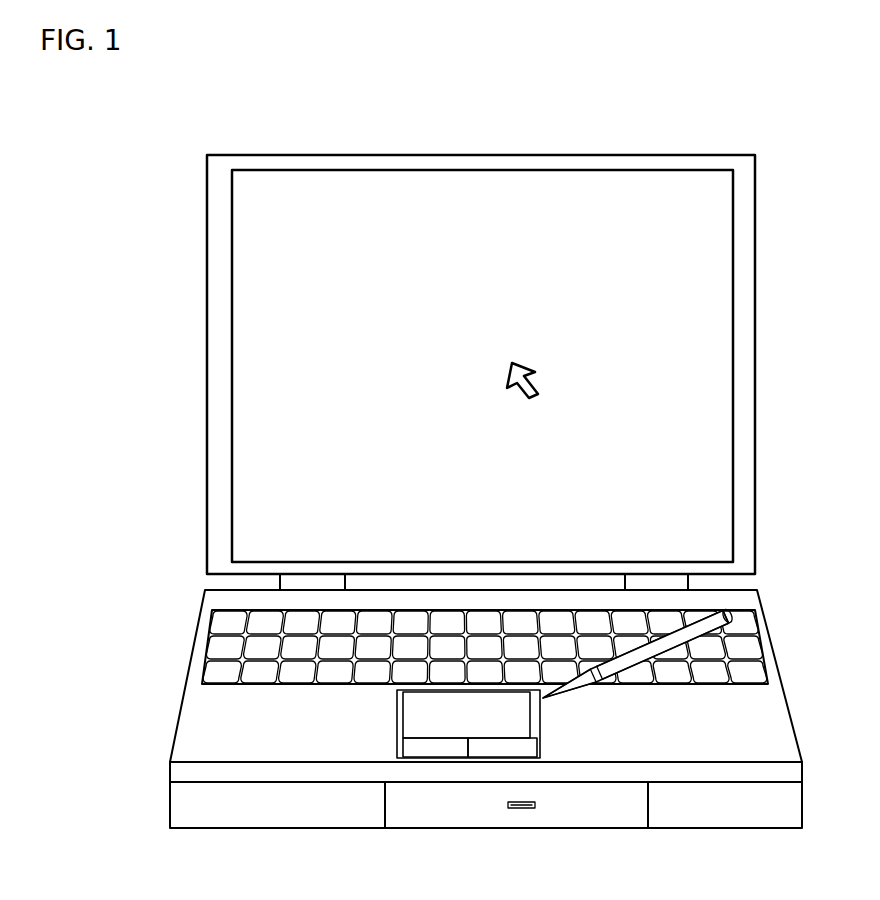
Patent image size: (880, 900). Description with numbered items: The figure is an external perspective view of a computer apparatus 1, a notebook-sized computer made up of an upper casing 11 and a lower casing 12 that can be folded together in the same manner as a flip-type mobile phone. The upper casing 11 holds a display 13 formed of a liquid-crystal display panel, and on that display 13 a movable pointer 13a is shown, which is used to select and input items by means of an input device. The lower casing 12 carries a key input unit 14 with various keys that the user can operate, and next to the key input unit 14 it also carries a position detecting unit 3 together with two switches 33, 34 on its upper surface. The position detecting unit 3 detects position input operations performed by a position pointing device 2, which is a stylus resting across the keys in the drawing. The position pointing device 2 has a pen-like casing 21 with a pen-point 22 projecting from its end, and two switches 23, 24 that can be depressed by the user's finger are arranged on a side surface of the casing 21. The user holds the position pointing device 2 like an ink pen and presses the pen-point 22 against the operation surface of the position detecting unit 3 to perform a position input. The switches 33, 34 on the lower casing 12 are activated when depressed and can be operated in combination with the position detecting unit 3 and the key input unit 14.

The computer apparatus 1 is at (798, 99).
The position pointing device 2 is at (742, 601).
The position detecting unit 3 is at (407, 718).
The upper casing 11 is at (757, 405).
The lower casing 12 is at (783, 670).
The display 13 is at (717, 340).
The movable pointer 13a is at (545, 375).
The key input unit 14 is at (219, 637).
The pen-like casing 21 is at (697, 632).
The pen-point 22 is at (545, 700).
The switch 23 is at (602, 673).
The switch 24 is at (633, 650).
The switch 33 is at (443, 750).
The switch 34 is at (525, 748).